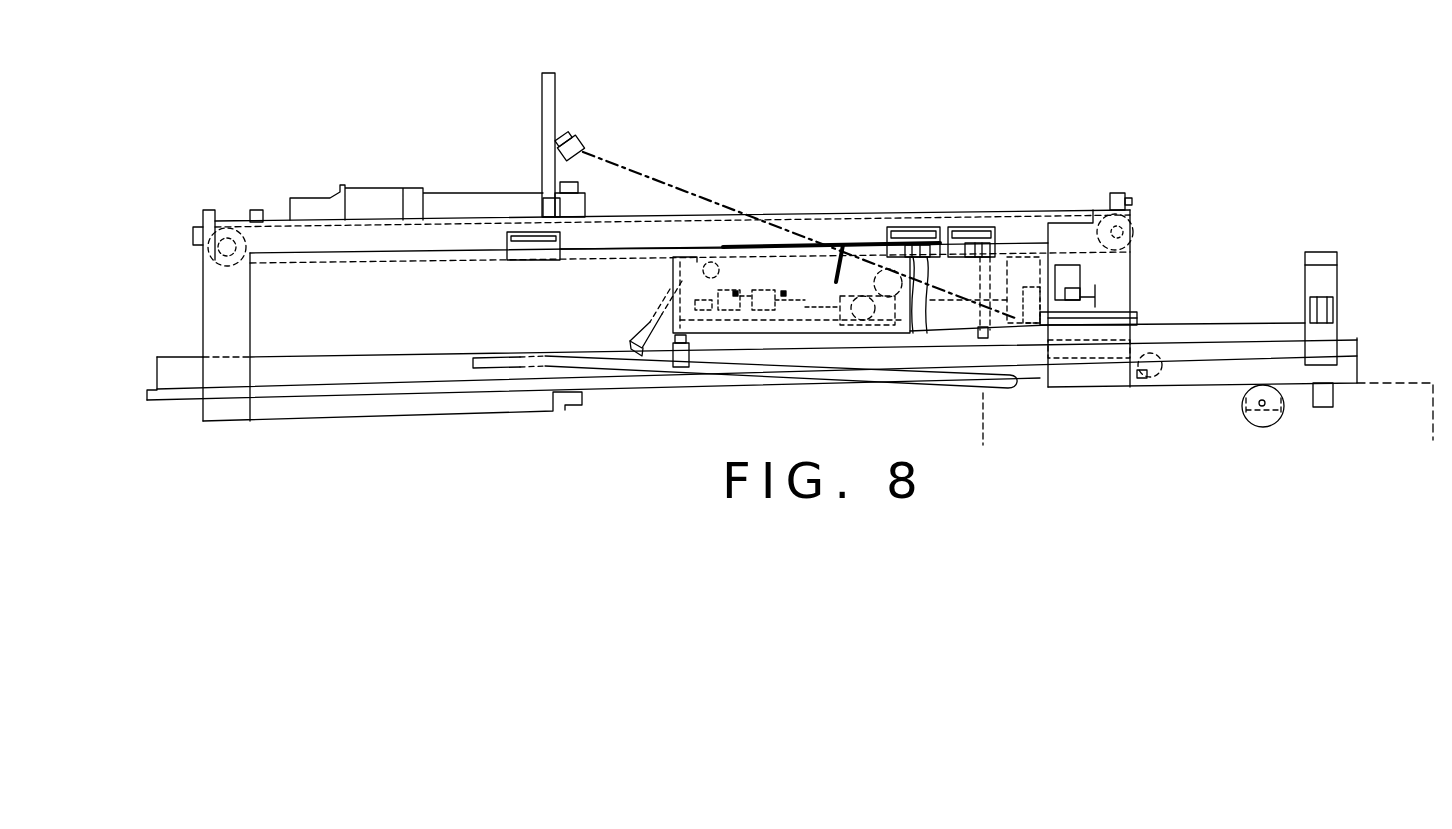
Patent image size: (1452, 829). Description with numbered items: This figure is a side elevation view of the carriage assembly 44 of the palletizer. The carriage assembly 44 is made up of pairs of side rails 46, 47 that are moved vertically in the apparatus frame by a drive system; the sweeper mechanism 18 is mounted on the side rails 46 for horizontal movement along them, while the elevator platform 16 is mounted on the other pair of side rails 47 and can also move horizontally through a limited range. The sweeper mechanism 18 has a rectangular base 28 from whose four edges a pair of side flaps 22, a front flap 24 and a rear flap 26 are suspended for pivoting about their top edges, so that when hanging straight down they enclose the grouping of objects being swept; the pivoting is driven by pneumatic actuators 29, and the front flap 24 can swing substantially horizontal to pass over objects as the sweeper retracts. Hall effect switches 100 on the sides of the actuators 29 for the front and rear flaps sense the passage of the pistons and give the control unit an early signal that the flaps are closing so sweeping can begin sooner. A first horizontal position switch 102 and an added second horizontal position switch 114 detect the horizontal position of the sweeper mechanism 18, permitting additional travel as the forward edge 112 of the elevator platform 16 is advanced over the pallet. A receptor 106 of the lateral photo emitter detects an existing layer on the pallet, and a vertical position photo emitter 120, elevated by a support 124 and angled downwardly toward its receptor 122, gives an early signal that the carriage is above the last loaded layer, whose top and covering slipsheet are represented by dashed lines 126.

The elevator platform 16 is at (917, 373).
The sweeper mechanism 18 is at (841, 248).
The side flaps 22 is at (731, 262).
The front flap 24 is at (993, 297).
The rear flap 26 is at (652, 328).
The rectangular base 28 is at (753, 277).
The pneumatic actuators 29 is at (744, 315).
The carriage assembly 44 is at (790, 185).
The side rails 46 is at (428, 237).
The side rails 47 is at (340, 367).
The Hall effect switches 100 is at (717, 305).
The first horizontal position switch 102 is at (912, 243).
The receptor 106 is at (1247, 417).
The forward edge 112 is at (1017, 382).
The second horizontal position switch 114 is at (963, 242).
The vertical position photo emitter 120 is at (587, 141).
The receptor 122 is at (1162, 368).
The support 124 is at (542, 100).
The dashed lines 126 is at (1433, 417).